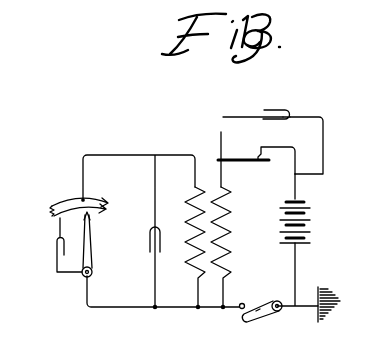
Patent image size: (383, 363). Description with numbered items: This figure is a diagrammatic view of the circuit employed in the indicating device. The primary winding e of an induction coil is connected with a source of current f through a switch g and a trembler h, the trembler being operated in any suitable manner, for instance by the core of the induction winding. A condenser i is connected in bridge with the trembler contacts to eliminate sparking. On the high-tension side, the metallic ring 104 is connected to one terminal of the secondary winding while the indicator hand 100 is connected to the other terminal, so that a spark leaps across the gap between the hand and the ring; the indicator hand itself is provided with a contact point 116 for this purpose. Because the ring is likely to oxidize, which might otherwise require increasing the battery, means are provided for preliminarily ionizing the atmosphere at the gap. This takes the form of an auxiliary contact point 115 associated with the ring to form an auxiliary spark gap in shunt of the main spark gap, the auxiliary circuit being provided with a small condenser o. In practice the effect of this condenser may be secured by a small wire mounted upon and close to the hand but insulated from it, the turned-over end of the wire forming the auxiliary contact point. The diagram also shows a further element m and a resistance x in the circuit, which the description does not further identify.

The metallic ring 104 is at (67, 199).
The auxiliary contact point 115 is at (57, 218).
The contact point 116 is at (89, 214).
The indicator hand 100 is at (90, 247).
The small condenser o is at (57, 250).
The lamp / indicator element m is at (148, 252).
The resistance x is at (193, 281).
The primary winding e is at (233, 252).
The trembler h is at (256, 156).
The condenser i is at (281, 123).
The source of current f is at (310, 226).
The switch g is at (260, 315).